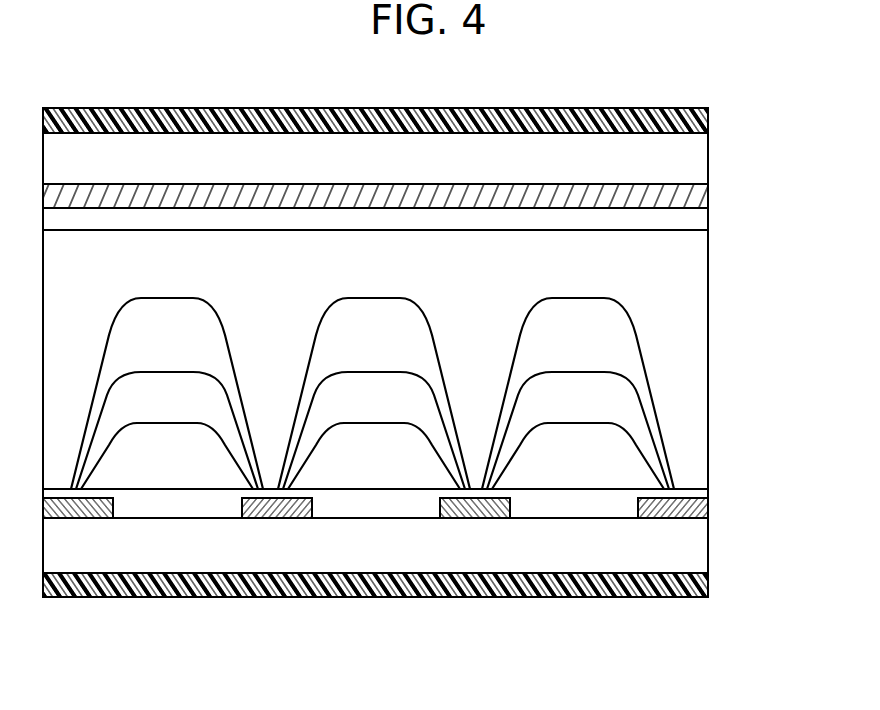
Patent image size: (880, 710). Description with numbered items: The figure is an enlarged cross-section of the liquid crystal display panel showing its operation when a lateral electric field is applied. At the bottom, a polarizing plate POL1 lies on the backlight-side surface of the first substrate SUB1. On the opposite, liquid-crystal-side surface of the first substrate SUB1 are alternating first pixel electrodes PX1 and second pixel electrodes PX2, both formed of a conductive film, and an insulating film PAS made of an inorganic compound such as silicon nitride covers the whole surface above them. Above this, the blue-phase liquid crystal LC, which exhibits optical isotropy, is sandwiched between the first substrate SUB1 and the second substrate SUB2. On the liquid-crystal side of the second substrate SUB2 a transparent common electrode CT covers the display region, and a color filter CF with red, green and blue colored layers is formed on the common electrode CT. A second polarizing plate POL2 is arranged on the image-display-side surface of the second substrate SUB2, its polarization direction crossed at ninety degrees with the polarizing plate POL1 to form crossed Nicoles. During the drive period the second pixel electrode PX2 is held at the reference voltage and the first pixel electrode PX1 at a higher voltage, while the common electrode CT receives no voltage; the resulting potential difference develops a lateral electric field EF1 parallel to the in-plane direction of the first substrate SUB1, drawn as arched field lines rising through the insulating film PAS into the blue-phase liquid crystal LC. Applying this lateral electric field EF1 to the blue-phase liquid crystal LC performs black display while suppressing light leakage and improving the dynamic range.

The polarizing plate POL2 is at (685, 121).
The second substrate SUB2 is at (693, 158).
The common electrode CT is at (693, 198).
The color filter CF is at (693, 224).
The blue-phase liquid crystal LC is at (693, 350).
The lateral electric field EF1 is at (222, 318).
The insulating film PAS is at (588, 497).
The second pixel electrode PX2 is at (82, 508).
The first pixel electrode PX1 is at (278, 508).
The first substrate SUB1 is at (693, 549).
The polarizing plate POL1 is at (690, 578).